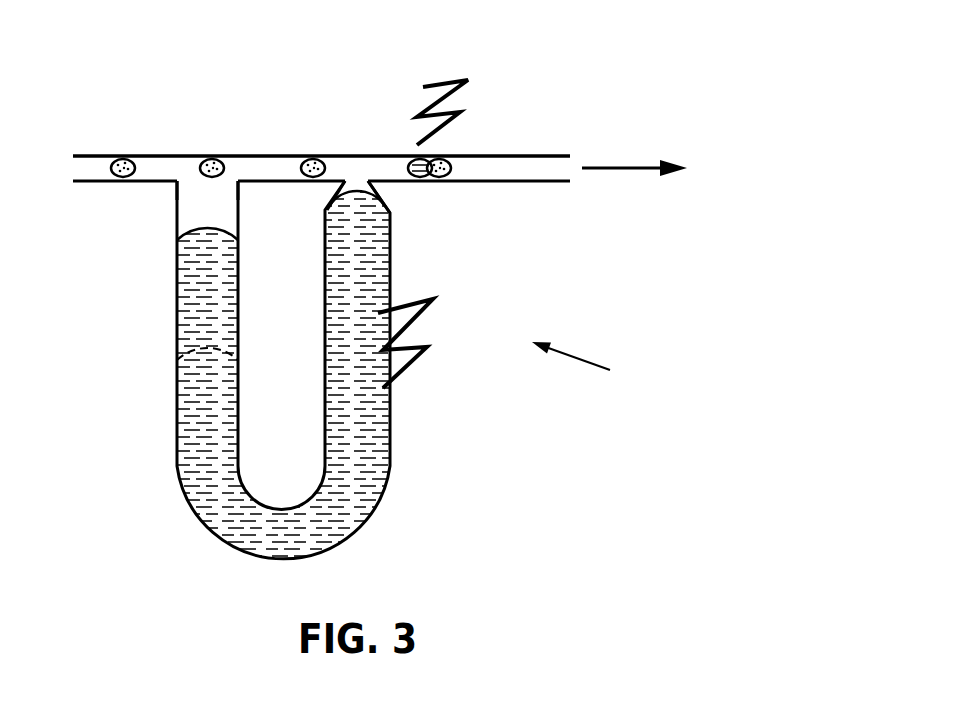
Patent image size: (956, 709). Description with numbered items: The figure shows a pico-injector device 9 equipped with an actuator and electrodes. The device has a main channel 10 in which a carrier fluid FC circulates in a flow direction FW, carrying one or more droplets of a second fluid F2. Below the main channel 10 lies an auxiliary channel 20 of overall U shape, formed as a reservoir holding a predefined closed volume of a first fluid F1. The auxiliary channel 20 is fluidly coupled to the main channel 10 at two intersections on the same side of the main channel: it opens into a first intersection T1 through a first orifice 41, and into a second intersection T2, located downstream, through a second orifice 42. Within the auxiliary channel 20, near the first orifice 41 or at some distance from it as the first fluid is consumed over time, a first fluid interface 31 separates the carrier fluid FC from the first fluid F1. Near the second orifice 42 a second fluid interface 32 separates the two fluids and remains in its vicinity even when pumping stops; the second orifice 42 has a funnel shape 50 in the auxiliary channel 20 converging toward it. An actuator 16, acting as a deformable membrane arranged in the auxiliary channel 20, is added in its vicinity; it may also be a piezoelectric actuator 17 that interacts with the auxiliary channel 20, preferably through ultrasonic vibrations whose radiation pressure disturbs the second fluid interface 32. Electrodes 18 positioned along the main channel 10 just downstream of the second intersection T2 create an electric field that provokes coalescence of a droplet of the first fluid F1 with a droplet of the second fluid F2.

The pico-injector device 9 is at (579, 364).
The main channel 10 is at (92, 181).
The auxiliary channel 20 is at (391, 444).
The first fluid interface 31 is at (227, 237).
The second fluid interface 32 is at (372, 183).
The first orifice 41 is at (233, 179).
The second orifice 42 is at (367, 179).
The funnel shape 50 is at (348, 193).
The actuator 16 is at (453, 207).
The piezoelectric actuator 17 is at (453, 207).
The electrodes 18 is at (451, 80).
The first fluid F1 is at (347, 310).
The second fluid F2 is at (121, 159).
The first intersection T1 is at (193, 166).
The second intersection T2 is at (352, 173).
The carrier fluid FC is at (510, 167).
The flow direction FW is at (634, 182).